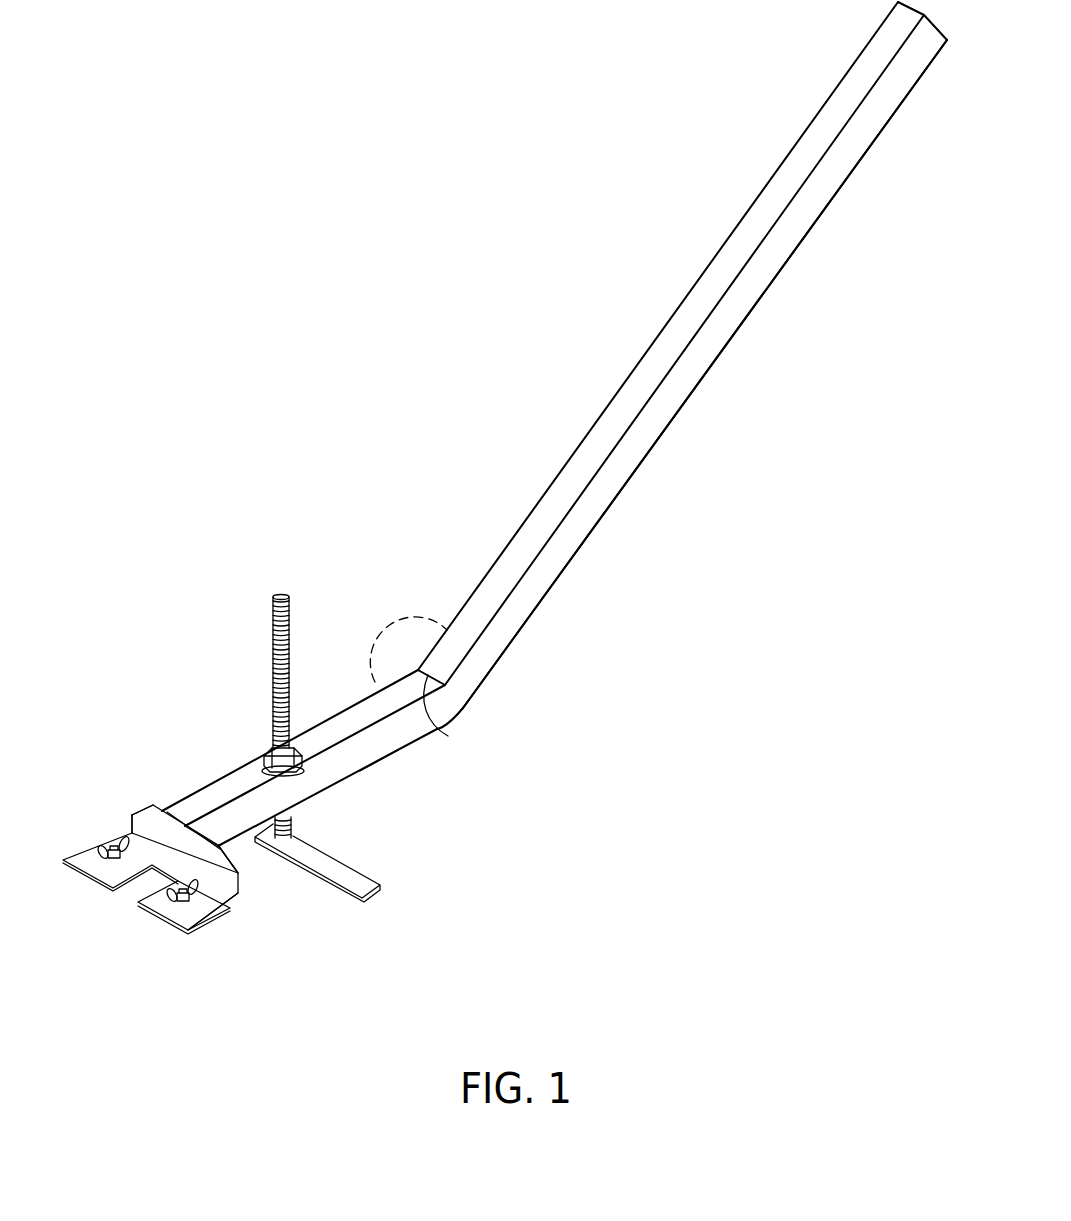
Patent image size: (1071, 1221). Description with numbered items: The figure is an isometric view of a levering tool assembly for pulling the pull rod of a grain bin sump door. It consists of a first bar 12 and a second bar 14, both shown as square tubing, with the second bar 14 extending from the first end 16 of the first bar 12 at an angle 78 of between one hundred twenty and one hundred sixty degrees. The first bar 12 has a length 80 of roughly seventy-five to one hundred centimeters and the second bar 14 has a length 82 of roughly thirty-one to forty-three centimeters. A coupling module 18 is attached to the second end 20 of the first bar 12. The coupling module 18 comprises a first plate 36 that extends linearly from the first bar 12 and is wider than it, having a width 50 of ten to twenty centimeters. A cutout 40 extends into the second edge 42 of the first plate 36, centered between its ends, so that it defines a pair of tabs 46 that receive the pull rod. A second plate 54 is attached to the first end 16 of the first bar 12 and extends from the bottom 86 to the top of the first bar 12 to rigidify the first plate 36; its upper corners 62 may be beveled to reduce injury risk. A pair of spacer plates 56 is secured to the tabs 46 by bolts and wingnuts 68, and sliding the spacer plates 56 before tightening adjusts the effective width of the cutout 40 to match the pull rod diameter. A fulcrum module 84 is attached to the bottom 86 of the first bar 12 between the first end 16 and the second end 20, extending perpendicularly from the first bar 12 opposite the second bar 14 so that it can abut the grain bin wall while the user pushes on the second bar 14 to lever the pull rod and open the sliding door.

The first bar 12 is at (341, 709).
The second bar 14 is at (672, 317).
The first end 16 is at (438, 728).
The coupling module 18 is at (166, 872).
The second end 20 is at (160, 832).
The first plate 36 is at (208, 890).
The cutout 40 is at (138, 890).
The second edge 42 is at (98, 872).
The tabs 46 is at (185, 907).
The width 50 is at (188, 843).
The second plate 54 is at (212, 865).
The spacer plates 56 is at (200, 922).
The upper corners 62 is at (143, 806).
The wingnuts 68 is at (130, 815).
The angle 78 is at (402, 630).
The length 80 is at (417, 742).
The length 82 is at (756, 306).
The fulcrum module 84 is at (268, 653).
The bottom 86 is at (368, 773).